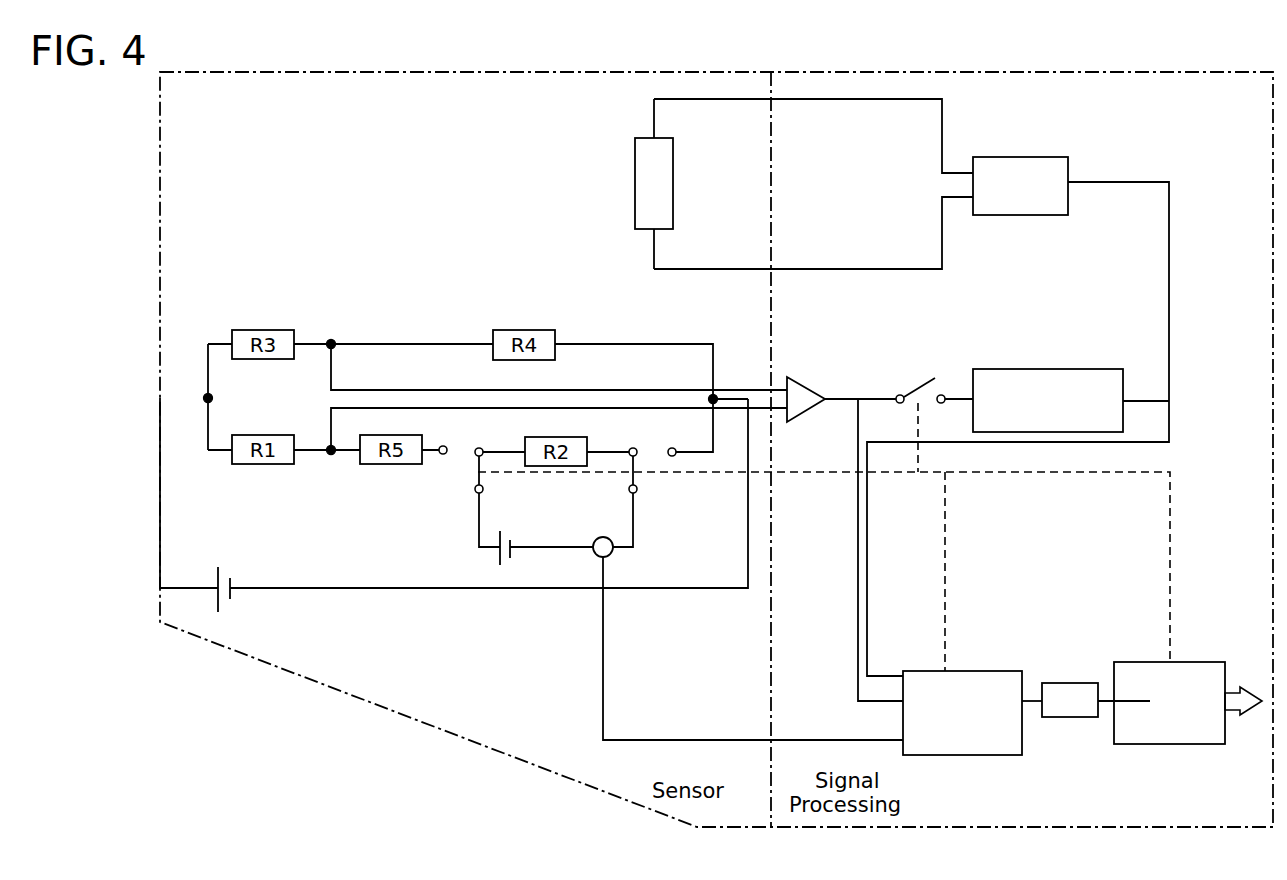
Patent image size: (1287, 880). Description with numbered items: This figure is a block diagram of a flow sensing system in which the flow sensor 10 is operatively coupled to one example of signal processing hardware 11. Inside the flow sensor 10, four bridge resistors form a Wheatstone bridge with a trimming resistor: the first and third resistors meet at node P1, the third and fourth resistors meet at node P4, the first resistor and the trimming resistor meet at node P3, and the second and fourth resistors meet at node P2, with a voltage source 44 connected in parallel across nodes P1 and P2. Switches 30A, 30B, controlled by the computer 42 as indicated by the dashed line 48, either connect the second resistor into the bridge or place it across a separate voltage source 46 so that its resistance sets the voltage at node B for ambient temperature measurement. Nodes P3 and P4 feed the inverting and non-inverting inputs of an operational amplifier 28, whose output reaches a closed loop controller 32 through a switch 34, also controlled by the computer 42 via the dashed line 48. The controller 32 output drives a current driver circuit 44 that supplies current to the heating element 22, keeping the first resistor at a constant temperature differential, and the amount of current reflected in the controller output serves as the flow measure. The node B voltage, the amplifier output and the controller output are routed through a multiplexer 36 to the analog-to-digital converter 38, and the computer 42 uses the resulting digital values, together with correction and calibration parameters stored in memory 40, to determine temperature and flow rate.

The flow sensor 10 is at (325, 687).
The signal processing hardware 11 is at (790, 828).
The heating element 22 is at (674, 180).
The operational amplifier 28 is at (800, 383).
The switch 30A is at (476, 488).
The switch 30B is at (637, 485).
The closed loop controller 32 is at (1098, 369).
The switch 34 is at (927, 382).
The multiplexer 36 is at (977, 671).
The analog-to-digital converter 38 is at (1052, 718).
The memory 40 is at (1113, 733).
The computer 42 is at (1142, 662).
The voltage source / current driver circuit 44 is at (1048, 157).
The voltage source 46 is at (505, 535).
The dashed line 48 is at (945, 527).
The node B is at (595, 553).
The node P1 is at (208, 398).
The node P2 is at (713, 399).
The node P3 is at (331, 455).
The node P4 is at (331, 344).